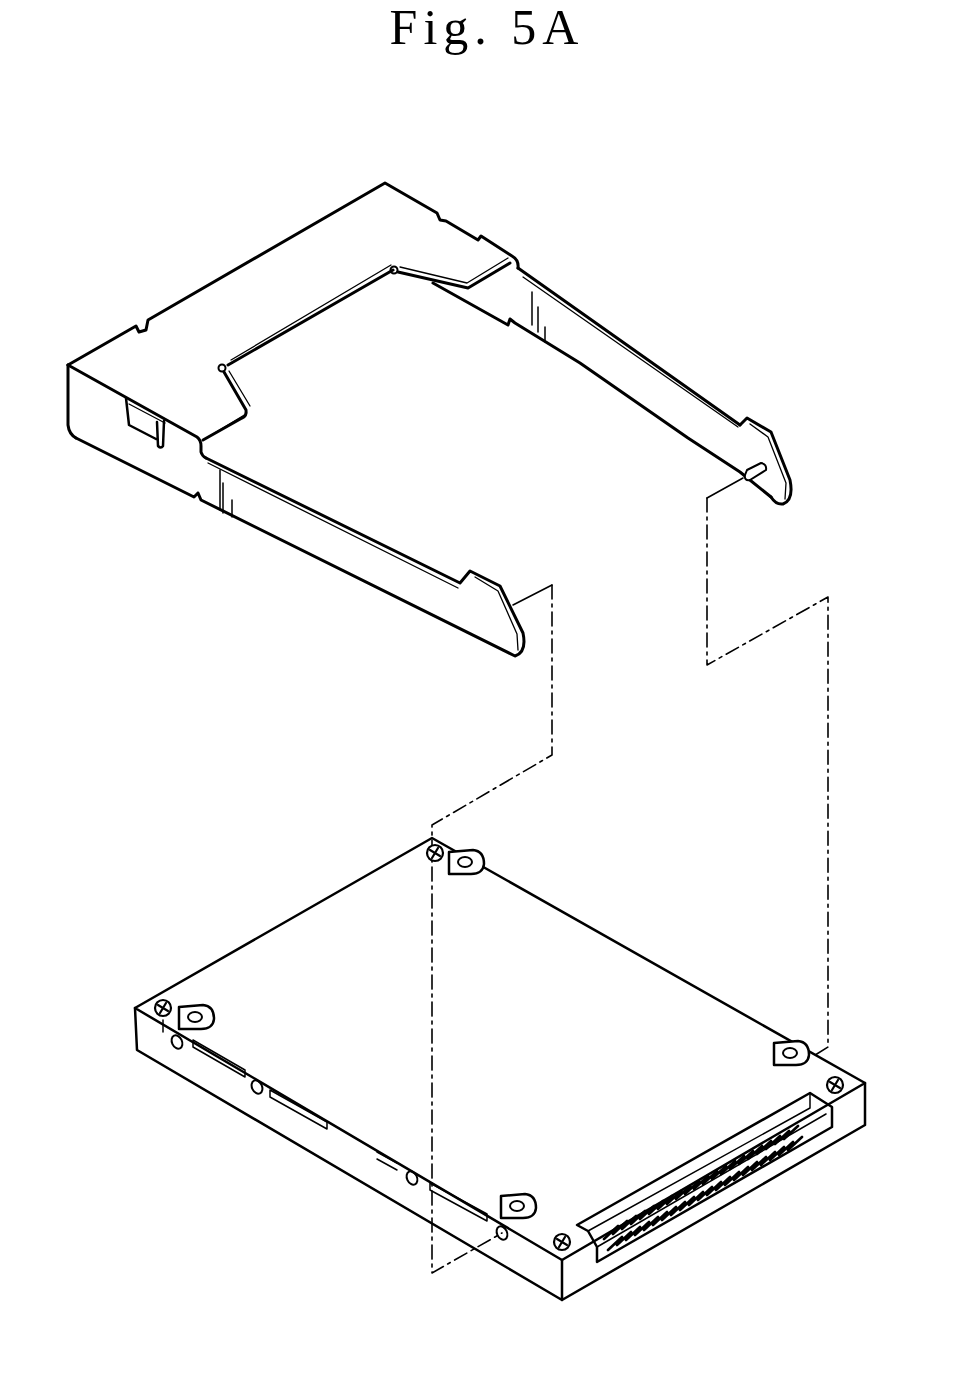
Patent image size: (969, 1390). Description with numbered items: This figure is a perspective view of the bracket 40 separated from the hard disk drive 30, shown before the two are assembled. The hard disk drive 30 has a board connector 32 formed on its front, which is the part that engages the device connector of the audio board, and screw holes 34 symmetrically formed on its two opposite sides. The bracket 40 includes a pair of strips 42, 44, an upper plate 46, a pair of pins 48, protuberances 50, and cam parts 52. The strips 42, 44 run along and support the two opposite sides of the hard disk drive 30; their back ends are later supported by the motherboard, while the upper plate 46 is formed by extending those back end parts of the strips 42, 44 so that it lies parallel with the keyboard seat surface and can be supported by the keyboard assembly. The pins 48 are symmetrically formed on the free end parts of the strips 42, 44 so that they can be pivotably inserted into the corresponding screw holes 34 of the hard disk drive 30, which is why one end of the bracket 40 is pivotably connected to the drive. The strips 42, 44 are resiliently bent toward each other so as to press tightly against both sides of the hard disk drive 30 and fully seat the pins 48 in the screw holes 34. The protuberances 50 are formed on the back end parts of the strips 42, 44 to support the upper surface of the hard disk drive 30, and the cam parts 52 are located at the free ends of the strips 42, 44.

The hard disk drive 30 is at (500, 1088).
The board connector 32 is at (637, 1233).
The screw holes 34 is at (500, 1240).
The bracket 40 is at (460, 419).
The strip 42 is at (322, 537).
The strip 44 is at (633, 375).
The upper plate 46 is at (232, 287).
The pins 48 is at (767, 480).
The protuberances 50 is at (148, 420).
The cam parts 52 is at (787, 460).